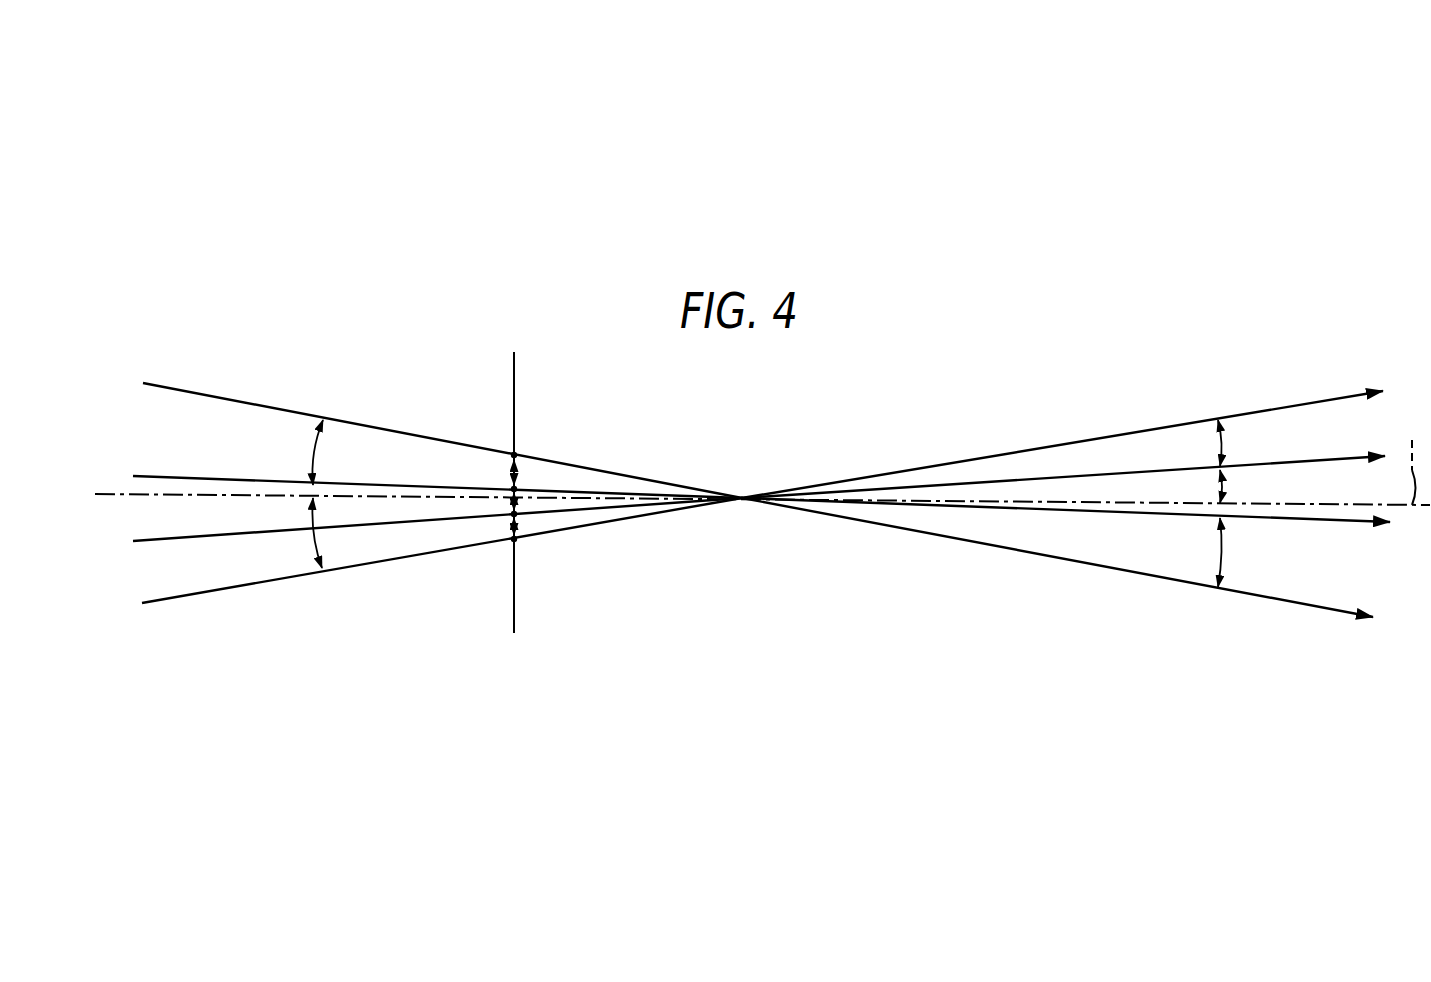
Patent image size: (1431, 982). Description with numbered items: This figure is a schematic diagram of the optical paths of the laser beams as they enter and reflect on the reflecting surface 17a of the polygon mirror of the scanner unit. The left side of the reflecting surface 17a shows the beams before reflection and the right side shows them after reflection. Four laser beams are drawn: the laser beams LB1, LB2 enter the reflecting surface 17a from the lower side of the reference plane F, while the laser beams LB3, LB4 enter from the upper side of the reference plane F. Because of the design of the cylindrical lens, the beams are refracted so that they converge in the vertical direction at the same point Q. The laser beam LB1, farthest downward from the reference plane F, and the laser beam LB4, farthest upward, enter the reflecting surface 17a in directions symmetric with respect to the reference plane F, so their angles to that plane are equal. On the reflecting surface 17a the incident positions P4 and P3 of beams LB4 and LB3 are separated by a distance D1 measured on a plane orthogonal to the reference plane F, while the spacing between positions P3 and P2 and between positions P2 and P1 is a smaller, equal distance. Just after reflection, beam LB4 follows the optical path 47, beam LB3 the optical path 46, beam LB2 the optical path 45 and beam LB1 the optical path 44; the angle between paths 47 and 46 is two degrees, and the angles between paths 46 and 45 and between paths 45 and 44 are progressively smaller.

The laser beam LB1 is at (226, 589).
The laser beam LB2 is at (226, 535).
The laser beam LB3 is at (226, 480).
The laser beam LB4 is at (226, 399).
The incident position P1 is at (510, 543).
The incident position P2 is at (510, 512).
The incident position P3 is at (510, 487).
The incident position P4 is at (511, 452).
The distance D1 is at (518, 471).
The reflecting surface 17a is at (516, 592).
The point Q is at (742, 492).
The optical path 44 is at (1110, 435).
The optical path 45 is at (1110, 475).
The optical path 46 is at (1128, 512).
The optical path 47 is at (1118, 569).
The reference plane F is at (1408, 459).